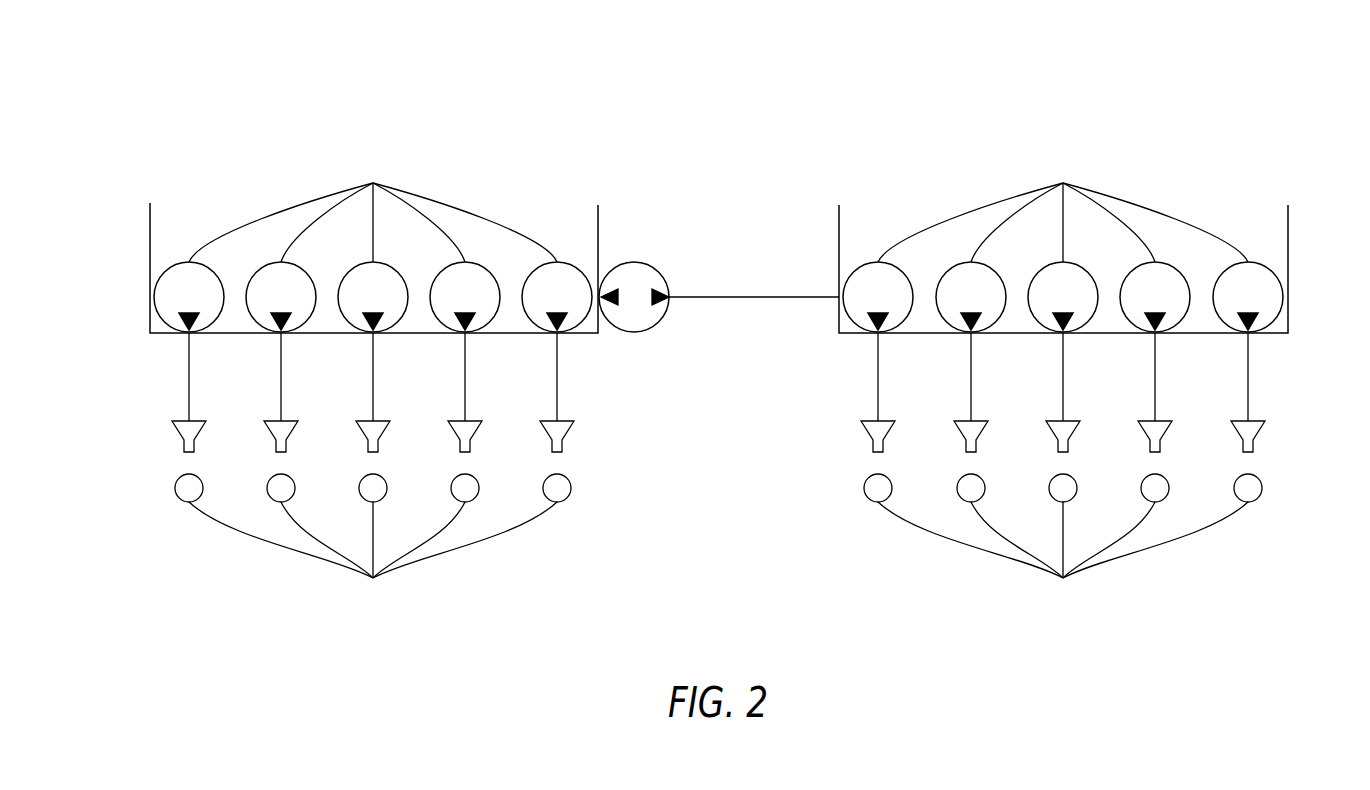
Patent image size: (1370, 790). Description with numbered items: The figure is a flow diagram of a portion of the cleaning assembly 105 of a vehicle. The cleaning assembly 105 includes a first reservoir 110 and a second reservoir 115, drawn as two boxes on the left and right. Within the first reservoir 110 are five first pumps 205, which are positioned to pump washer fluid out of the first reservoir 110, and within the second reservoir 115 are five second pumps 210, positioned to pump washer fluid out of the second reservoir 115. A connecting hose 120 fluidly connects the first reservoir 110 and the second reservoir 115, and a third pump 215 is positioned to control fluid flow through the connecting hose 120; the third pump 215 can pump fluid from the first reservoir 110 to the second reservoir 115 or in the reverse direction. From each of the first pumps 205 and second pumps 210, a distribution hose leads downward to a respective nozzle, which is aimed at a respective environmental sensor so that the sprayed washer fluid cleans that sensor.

The cleaning assembly 105 is at (1216, 72).
The first reservoir 110 is at (150, 228).
The second reservoir 115 is at (1288, 230).
The connecting hose 120 is at (741, 296).
The first pump 205 is at (373, 207).
The second pump 210 is at (1063, 207).
The third pump 215 is at (634, 262).